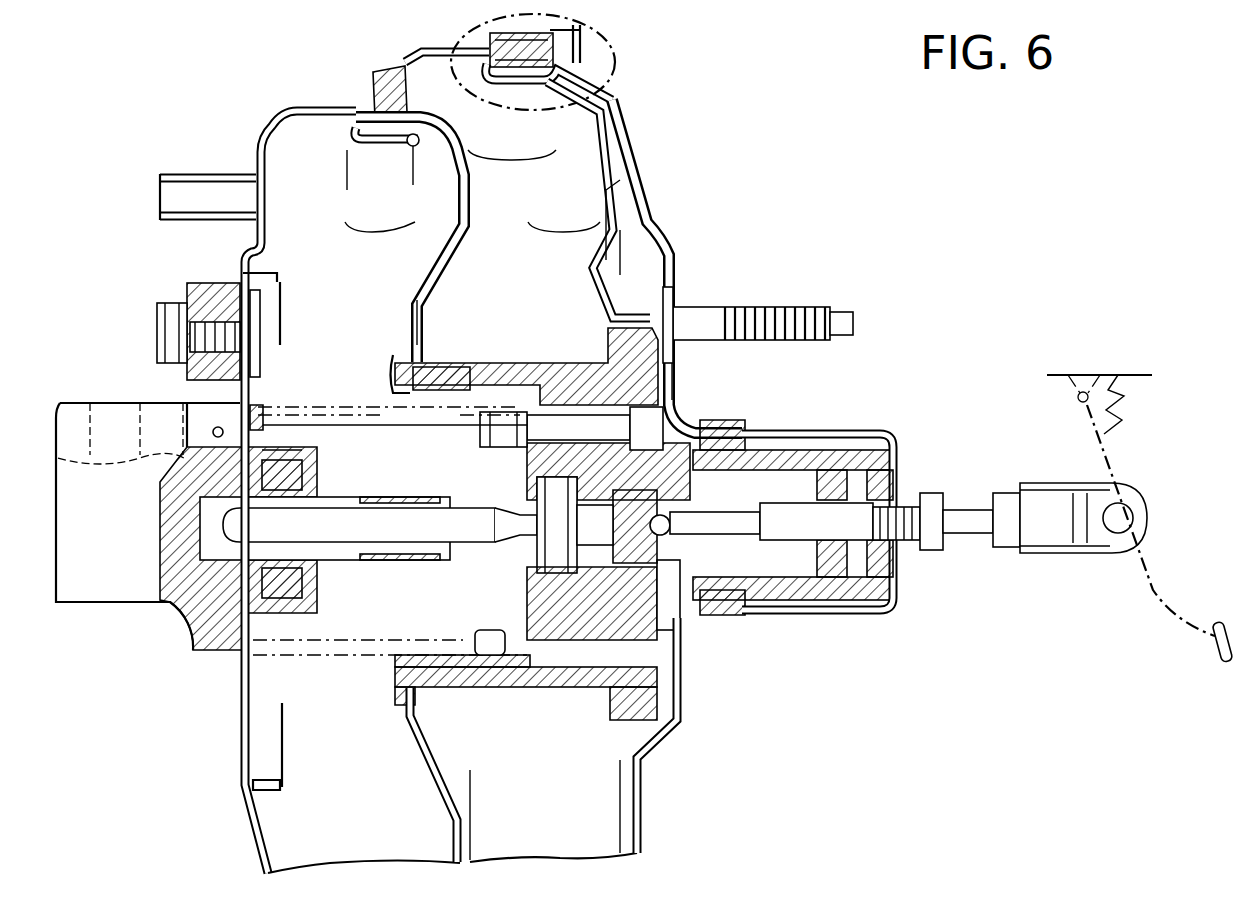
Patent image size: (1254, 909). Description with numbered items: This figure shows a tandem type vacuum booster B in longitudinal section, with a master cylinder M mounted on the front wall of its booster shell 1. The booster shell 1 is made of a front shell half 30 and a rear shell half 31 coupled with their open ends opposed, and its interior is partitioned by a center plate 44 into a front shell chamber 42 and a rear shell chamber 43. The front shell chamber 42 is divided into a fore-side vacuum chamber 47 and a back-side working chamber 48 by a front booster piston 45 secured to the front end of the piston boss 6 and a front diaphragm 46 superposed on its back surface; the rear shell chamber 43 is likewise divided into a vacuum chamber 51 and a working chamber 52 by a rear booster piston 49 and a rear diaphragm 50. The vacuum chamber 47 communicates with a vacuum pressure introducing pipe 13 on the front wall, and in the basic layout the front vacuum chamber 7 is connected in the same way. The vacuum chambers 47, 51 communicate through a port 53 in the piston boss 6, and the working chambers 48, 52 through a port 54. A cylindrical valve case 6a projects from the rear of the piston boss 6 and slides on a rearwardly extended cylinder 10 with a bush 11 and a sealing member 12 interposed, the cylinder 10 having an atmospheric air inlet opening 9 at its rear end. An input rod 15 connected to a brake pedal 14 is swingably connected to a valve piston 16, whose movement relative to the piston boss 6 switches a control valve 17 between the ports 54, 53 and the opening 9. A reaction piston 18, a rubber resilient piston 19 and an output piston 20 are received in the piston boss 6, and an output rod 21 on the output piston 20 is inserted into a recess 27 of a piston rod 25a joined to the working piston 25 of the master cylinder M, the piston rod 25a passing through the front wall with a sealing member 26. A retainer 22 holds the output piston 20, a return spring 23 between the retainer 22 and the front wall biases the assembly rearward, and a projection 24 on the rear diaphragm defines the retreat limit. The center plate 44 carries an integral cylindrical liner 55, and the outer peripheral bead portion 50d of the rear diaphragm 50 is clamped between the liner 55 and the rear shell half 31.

The booster shell 1 is at (512, 165).
The piston boss 6 is at (530, 470).
The valve case 6a is at (788, 452).
The vacuum chamber 7 is at (618, 63).
The atmospheric air inlet opening 9 is at (893, 470).
The rearwardly extended cylinder 10 is at (835, 432).
The bush 11 is at (722, 421).
The sealing member 12 is at (735, 430).
The vacuum pressure introducing pipe 13 is at (200, 178).
The brake pedal 14 is at (1152, 600).
The input rod 15 is at (972, 540).
The valve piston 16 is at (605, 490).
The control valve 17 is at (665, 495).
The reaction piston 18 is at (610, 550).
The resilient piston 19 is at (540, 568).
The output piston 20 is at (500, 535).
The output rod 21 is at (370, 510).
The retainer 22 is at (480, 630).
The return spring 23 is at (258, 410).
The projection 24 is at (620, 134).
The working piston 25 is at (178, 608).
The piston rod 25a is at (422, 495).
The sealing member 26 is at (305, 460).
The recess 27 is at (345, 560).
The front shell half 30 is at (450, 70).
The rear shell half 31 is at (570, 96).
The front shell chamber 42 is at (380, 240).
The rear shell chamber 43 is at (564, 240).
The center plate 44 is at (470, 210).
The front booster piston 45 is at (410, 322).
The front diaphragm 46 is at (352, 130).
The vacuum chamber 47 is at (375, 218).
The working chamber 48 is at (399, 177).
The rear booster piston 49 is at (598, 302).
The rear diaphragm 50 is at (652, 232).
The outer peripheral bead portion 50d is at (612, 44).
The vacuum chamber 51 is at (576, 220).
The working chamber 52 is at (612, 185).
The port 53 is at (530, 592).
The port 54 is at (565, 690).
The cylindrical liner 55 is at (405, 70).
The vacuum booster B is at (258, 135).
The master cylinder M is at (82, 408).